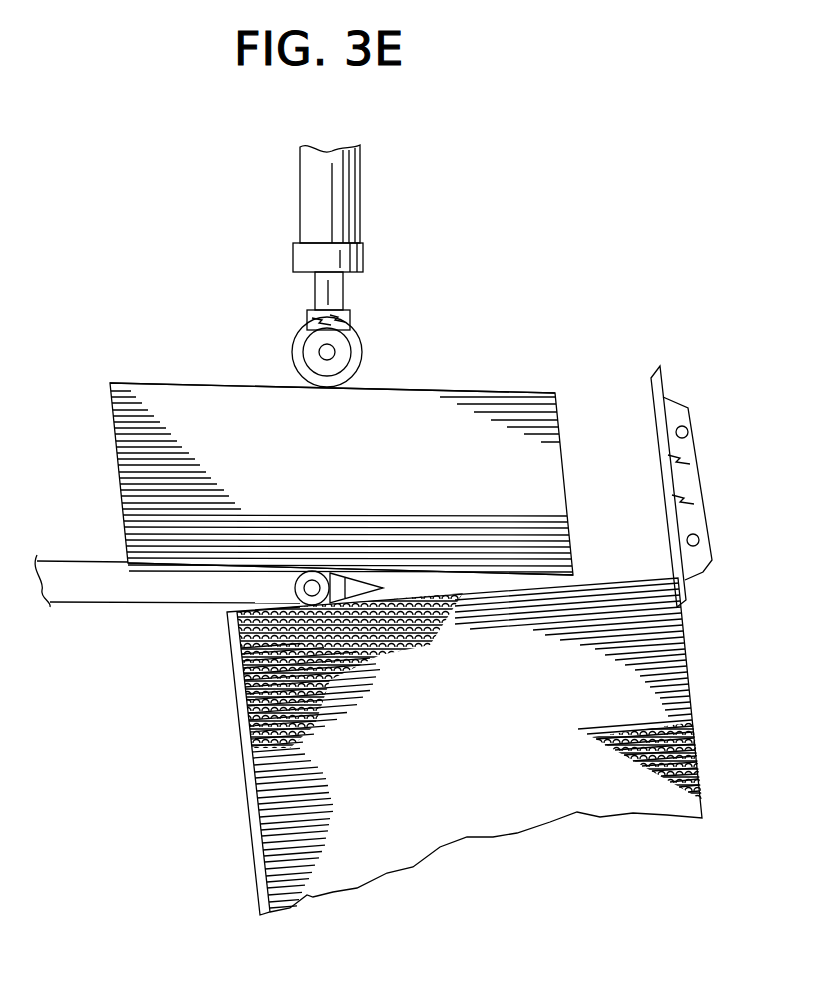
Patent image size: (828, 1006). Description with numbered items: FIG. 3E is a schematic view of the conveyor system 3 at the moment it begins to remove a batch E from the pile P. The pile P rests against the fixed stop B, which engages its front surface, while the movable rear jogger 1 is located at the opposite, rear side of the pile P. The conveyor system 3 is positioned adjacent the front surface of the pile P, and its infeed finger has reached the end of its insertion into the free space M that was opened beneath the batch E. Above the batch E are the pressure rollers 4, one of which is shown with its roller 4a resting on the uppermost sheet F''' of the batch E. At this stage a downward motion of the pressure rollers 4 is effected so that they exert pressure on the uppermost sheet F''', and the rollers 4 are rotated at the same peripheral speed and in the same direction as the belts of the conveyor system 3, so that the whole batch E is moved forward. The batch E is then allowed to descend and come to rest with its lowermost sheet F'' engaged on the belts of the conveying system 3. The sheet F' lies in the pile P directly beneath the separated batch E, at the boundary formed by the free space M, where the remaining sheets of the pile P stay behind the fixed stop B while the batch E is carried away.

The movable rear jogger 1 is at (678, 402).
The conveyor system 3 is at (118, 582).
The pressure rollers 4 is at (364, 200).
The press roller 4a is at (364, 380).
The batch E is at (365, 497).
The first fold F' is at (224, 637).
The lowermost sheet F'' is at (350, 535).
The uppermost sheet F''' is at (332, 355).
The free space M is at (472, 586).
The pile P is at (428, 768).
The fixed stop B is at (250, 822).